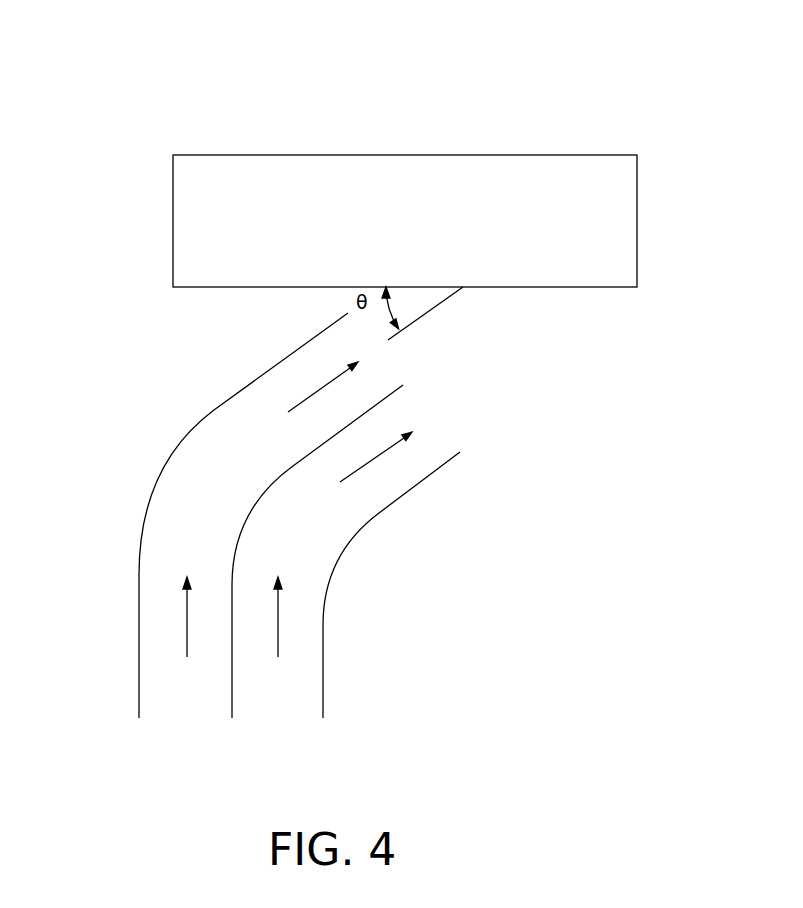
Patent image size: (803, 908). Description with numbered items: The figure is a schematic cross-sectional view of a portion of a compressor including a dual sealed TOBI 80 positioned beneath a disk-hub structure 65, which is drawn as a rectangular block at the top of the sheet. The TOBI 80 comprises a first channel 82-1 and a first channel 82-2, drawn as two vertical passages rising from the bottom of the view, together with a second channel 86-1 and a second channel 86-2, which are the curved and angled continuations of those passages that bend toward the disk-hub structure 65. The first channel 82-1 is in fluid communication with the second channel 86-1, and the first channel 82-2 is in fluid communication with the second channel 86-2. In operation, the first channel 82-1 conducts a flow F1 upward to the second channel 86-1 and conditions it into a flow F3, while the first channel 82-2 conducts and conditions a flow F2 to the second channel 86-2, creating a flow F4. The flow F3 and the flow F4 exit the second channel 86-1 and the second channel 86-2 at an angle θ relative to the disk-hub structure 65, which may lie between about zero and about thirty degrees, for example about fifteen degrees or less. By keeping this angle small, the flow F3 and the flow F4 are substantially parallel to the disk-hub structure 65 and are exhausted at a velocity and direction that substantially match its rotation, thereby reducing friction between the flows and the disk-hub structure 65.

The disk-hub structure 65 is at (408, 170).
The TOBI 80 is at (323, 662).
The first channel 82-1 is at (323, 602).
The first channel 82-2 is at (138, 613).
The second channel 86-1 is at (398, 498).
The second channel 86-2 is at (220, 407).
The flow F1 is at (277, 632).
The flow F2 is at (186, 632).
The flow F3 is at (363, 469).
The flow F4 is at (309, 398).